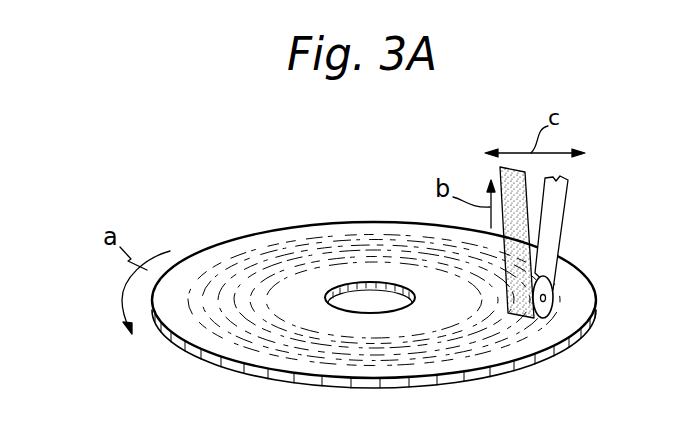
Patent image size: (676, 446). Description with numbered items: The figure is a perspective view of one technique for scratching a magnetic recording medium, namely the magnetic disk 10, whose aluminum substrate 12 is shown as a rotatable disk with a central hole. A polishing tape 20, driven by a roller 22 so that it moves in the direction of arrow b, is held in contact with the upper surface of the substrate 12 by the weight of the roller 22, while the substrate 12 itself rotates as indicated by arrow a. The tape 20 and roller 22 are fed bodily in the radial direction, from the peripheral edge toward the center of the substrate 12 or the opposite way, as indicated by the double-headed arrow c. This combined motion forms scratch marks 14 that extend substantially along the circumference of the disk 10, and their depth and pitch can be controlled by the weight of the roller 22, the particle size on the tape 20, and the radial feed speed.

The magnetic disk 10 is at (374, 252).
The Al substrate 12 is at (287, 373).
The scratch marks 14 is at (510, 340).
The polishing tape 20 is at (520, 228).
The roller 22 is at (548, 286).